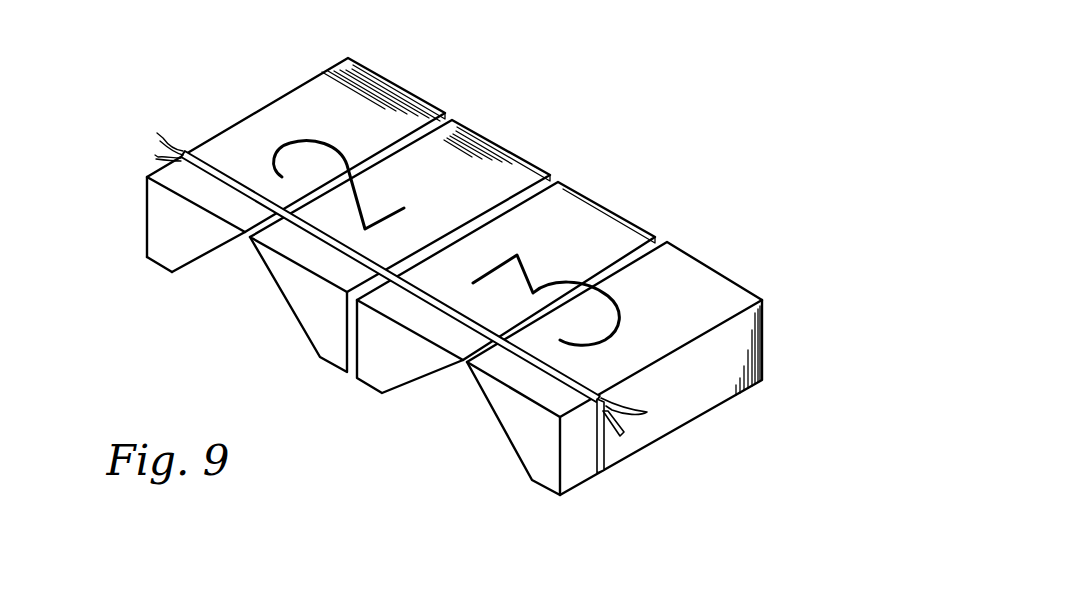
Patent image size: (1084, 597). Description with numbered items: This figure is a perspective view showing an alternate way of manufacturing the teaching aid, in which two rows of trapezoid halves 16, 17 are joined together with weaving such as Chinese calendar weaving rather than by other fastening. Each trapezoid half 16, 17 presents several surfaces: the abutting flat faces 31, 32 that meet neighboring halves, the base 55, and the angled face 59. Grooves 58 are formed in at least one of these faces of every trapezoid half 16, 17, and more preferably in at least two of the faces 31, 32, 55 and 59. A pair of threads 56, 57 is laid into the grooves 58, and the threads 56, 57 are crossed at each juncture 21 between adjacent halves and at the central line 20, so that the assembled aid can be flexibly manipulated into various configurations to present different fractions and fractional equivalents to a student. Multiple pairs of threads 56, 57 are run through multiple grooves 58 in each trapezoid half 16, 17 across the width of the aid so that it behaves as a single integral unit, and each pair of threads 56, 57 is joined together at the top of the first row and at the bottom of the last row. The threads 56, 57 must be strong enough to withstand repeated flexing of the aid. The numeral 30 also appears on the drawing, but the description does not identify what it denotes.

The block assembly 30 is at (415, 264).
The trapezoid half 16 is at (496, 298).
The trapezoid half 17 is at (625, 365).
The abutting flat face 32 is at (145, 271).
The base 55 is at (154, 264).
The angled face 59 is at (202, 258).
The central line 20 is at (350, 388).
The juncture 21 is at (445, 382).
The groove 58 is at (597, 380).
The thread 56 is at (630, 404).
The thread 57 is at (620, 440).
The abutting flat face 31 is at (561, 459).